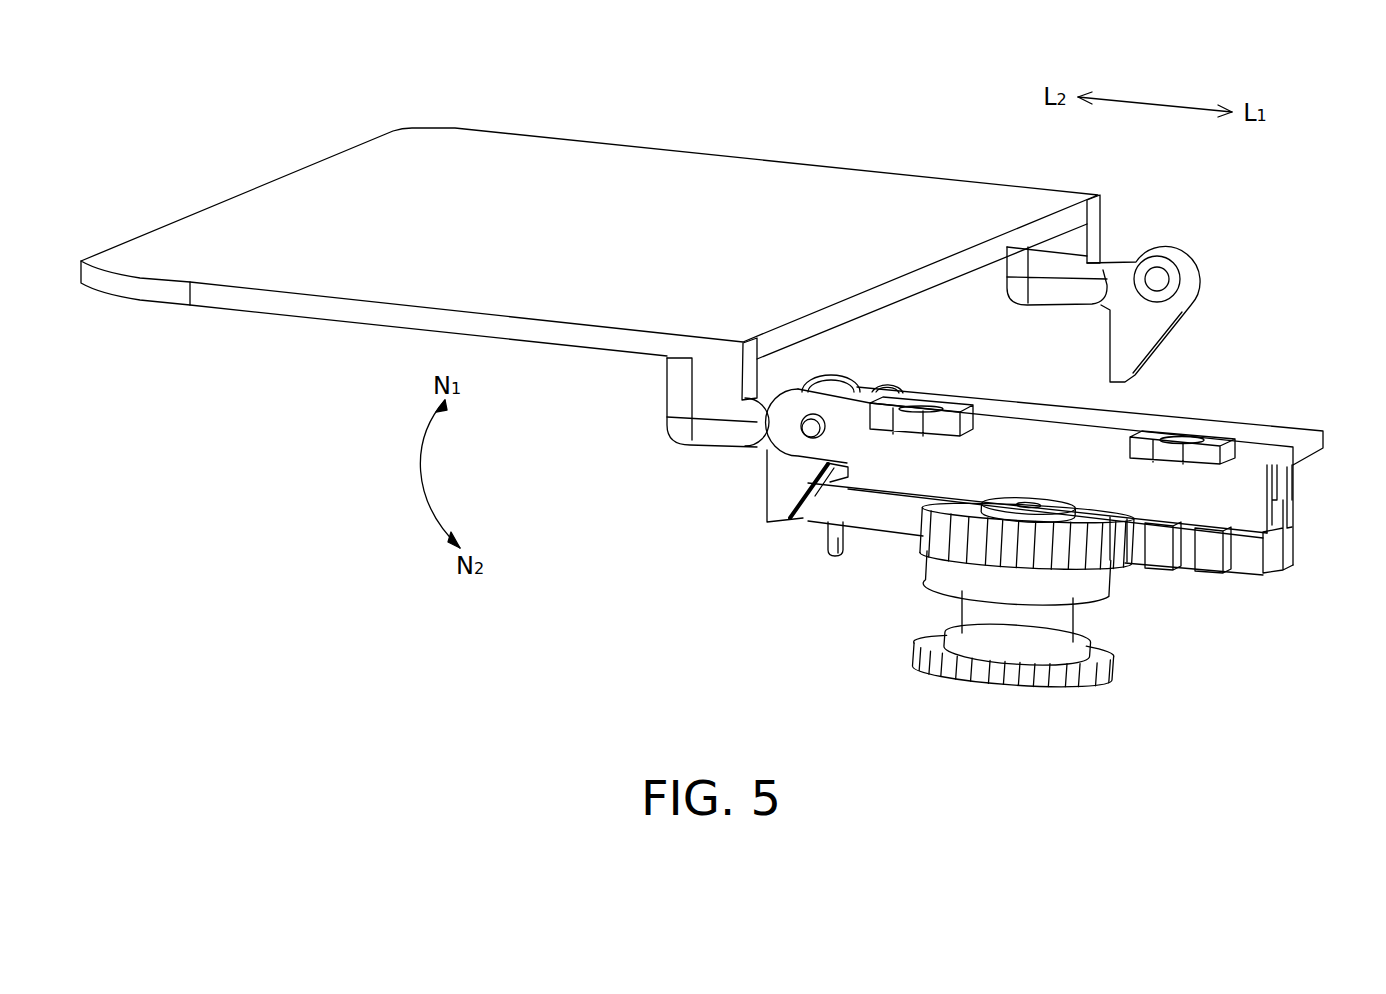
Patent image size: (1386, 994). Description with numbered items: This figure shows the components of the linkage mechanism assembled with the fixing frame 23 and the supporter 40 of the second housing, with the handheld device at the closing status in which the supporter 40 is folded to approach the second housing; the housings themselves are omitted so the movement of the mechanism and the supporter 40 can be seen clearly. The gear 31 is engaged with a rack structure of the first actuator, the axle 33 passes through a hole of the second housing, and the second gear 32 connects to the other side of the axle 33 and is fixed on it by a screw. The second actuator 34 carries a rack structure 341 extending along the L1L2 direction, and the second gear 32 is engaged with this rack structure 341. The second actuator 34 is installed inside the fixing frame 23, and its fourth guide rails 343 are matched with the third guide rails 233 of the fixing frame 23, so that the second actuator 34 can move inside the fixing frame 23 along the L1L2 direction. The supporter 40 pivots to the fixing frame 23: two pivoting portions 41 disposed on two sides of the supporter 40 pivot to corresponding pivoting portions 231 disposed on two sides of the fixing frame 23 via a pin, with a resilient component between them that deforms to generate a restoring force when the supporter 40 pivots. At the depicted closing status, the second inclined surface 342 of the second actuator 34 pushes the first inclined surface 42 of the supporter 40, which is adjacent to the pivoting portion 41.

The supporter 40 is at (638, 158).
The pivoting portion 41 is at (1160, 278).
The first inclined surface 42 is at (1165, 338).
The fixing frame 23 is at (1047, 432).
The pivoting portion 231 is at (818, 420).
The third guide rails 233 is at (1288, 501).
The second actuator 34 is at (900, 523).
The rack structure 341 is at (1182, 565).
The second inclined surface 342 is at (807, 523).
The fourth guide rails 343 is at (1285, 481).
The gear 31 is at (1023, 675).
The second gear 32 is at (1077, 560).
The axle 33 is at (1053, 617).